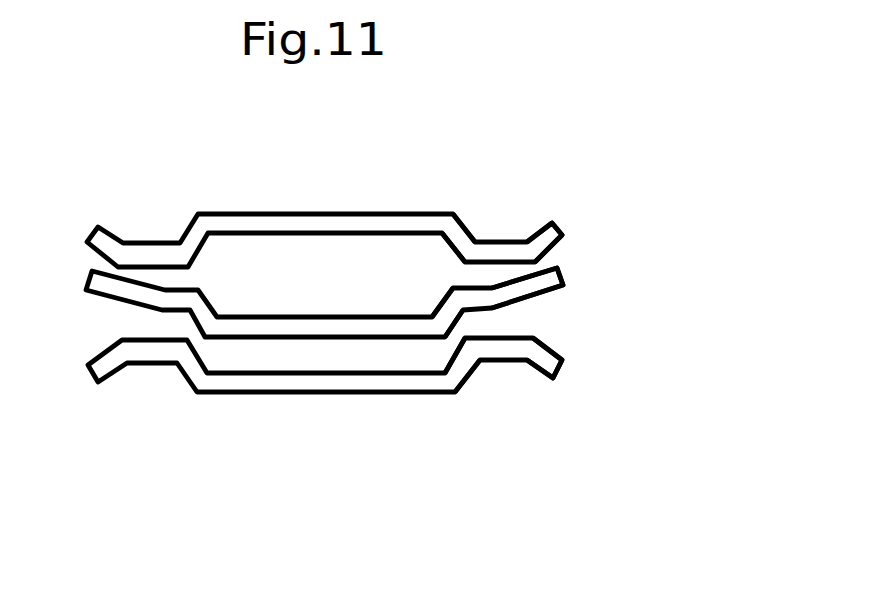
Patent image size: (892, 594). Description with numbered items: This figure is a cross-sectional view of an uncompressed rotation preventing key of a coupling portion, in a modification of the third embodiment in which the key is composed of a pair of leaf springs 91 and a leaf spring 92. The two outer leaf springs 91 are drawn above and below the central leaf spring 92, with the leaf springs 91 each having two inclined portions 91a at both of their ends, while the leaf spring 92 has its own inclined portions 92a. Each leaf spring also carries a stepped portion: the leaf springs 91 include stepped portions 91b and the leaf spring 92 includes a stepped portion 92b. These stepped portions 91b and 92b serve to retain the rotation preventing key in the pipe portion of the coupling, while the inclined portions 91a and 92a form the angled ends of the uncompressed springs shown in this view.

The leaf spring 91 is at (365, 227).
The inclined portion 91a is at (543, 240).
The stepped portion 91b is at (455, 238).
The leaf spring 92 is at (342, 328).
The inclined portion 92a is at (540, 288).
The stepped portion 92b is at (452, 313).